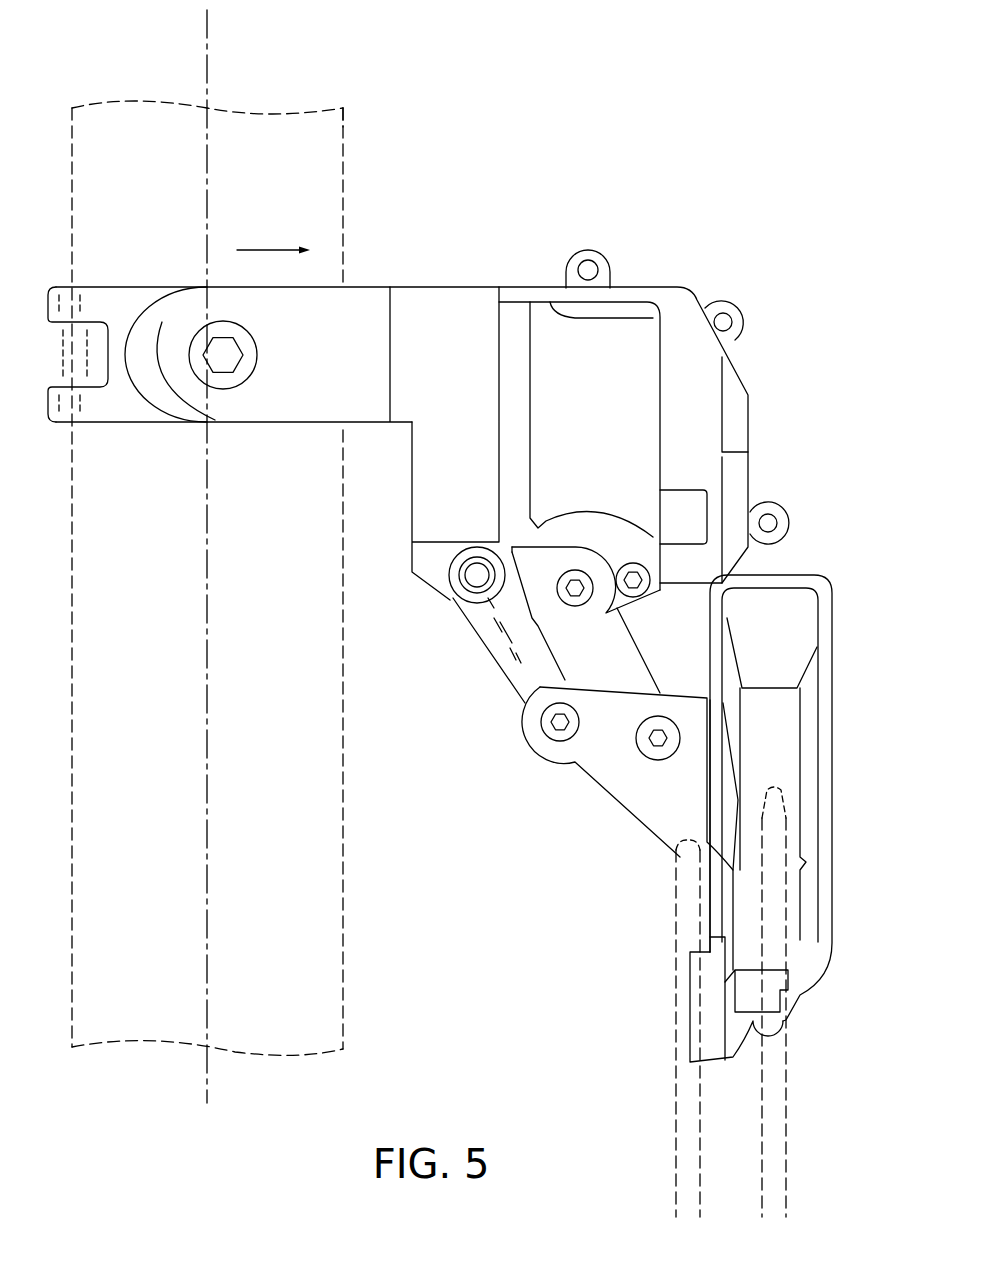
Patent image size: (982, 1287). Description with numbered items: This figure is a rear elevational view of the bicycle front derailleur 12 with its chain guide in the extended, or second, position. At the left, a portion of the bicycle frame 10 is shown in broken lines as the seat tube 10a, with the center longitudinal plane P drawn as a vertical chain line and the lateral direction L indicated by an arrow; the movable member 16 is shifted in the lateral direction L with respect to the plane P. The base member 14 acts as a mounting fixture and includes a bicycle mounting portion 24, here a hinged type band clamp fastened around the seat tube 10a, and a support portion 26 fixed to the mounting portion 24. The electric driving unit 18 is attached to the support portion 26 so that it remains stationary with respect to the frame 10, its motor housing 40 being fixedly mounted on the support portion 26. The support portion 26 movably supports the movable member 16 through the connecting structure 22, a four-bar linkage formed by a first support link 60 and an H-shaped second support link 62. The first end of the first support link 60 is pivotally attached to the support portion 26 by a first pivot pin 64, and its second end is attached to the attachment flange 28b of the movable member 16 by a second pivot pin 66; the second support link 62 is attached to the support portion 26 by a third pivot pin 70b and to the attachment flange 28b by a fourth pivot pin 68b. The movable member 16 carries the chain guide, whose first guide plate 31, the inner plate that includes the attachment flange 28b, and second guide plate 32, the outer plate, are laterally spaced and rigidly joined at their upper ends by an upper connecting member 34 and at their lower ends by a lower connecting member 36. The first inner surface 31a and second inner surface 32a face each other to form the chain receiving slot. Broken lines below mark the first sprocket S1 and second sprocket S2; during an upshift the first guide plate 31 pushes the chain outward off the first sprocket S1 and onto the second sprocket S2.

The center longitudinal plane P is at (207, 27).
The lateral direction L is at (272, 250).
The bicycle frame 10 is at (355, 192).
The seat tube 10a is at (345, 127).
The front derailleur 12 is at (699, 237).
The base member 14 is at (292, 466).
The bicycle mounting portion 24 is at (304, 434).
The support portion 26 is at (400, 509).
The movable member 16 is at (826, 563).
The electric driving unit 18 is at (640, 278).
The connecting structure 22 is at (481, 706).
The attachment flange 28b is at (573, 770).
The first guide plate 31 is at (712, 652).
The first inner surface 31a is at (733, 712).
The second guide plate 32 is at (832, 917).
The second inner surface 32a is at (817, 717).
The upper connecting member 34 is at (752, 592).
The lower connecting member 36 is at (750, 995).
The motor housing 40 is at (748, 435).
The first support link 60 is at (498, 670).
The second support link 62 is at (627, 630).
The first pivot pin 64 is at (476, 580).
The second pivot pin 66 is at (550, 732).
The fourth pivot pin 68b is at (663, 758).
The third pivot pin 70b is at (574, 570).
The first sprocket S1 is at (674, 1143).
The second sprocket S2 is at (760, 1143).